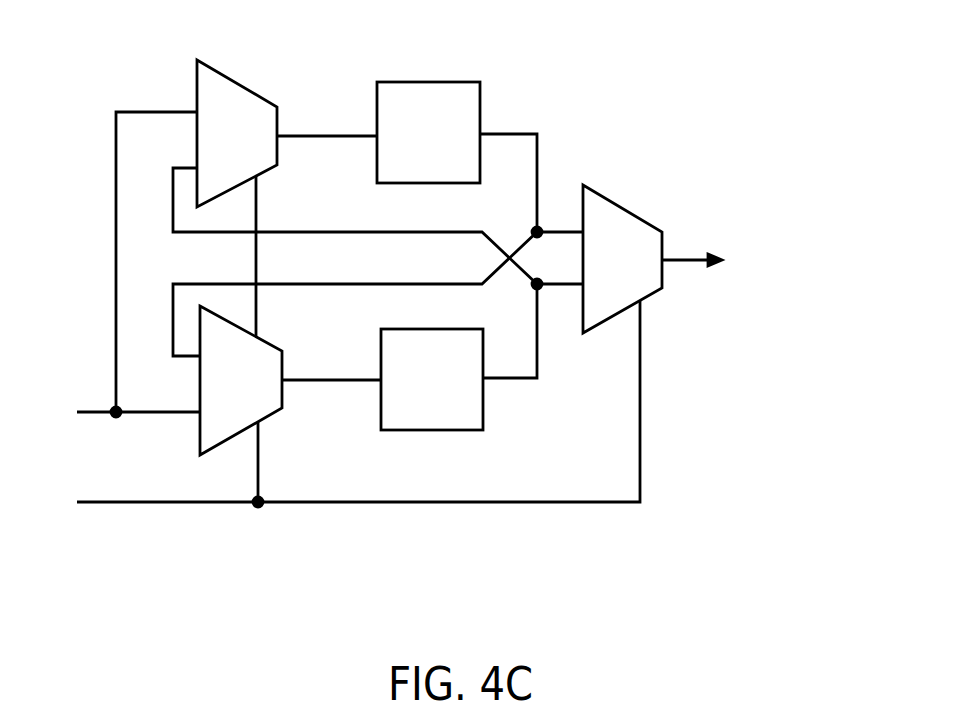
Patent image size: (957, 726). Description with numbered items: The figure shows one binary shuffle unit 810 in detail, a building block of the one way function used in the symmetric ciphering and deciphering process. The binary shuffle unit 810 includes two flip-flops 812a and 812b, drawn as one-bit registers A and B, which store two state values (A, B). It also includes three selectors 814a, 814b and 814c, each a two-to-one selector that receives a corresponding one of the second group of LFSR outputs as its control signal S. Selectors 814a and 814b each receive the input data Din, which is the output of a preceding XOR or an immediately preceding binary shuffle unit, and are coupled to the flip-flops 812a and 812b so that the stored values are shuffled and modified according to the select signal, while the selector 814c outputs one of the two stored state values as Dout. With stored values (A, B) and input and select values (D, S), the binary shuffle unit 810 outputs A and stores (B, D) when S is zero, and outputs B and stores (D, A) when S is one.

The binary shuffle unit 810 is at (824, 185).
The flip-flop 812a is at (409, 175).
The flip-flop 812b is at (410, 342).
The selector 814a is at (249, 103).
The selector 814b is at (203, 440).
The selector 814c is at (655, 290).